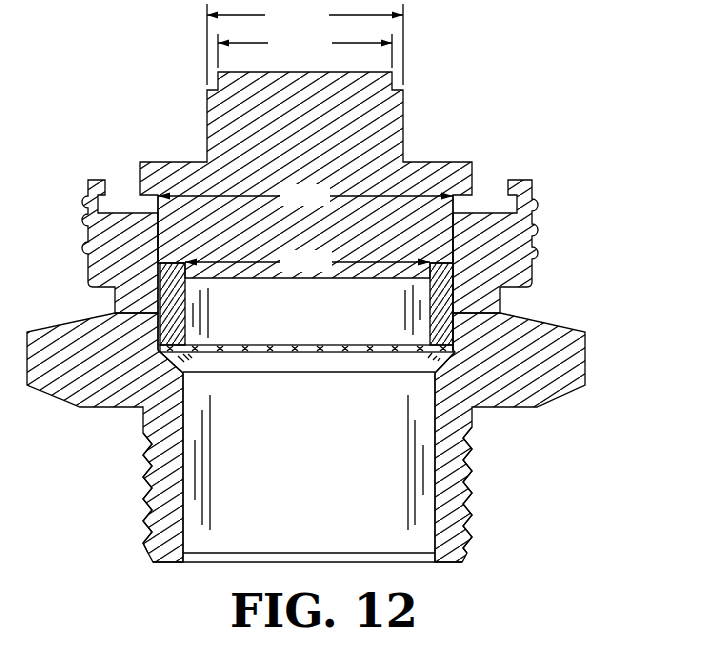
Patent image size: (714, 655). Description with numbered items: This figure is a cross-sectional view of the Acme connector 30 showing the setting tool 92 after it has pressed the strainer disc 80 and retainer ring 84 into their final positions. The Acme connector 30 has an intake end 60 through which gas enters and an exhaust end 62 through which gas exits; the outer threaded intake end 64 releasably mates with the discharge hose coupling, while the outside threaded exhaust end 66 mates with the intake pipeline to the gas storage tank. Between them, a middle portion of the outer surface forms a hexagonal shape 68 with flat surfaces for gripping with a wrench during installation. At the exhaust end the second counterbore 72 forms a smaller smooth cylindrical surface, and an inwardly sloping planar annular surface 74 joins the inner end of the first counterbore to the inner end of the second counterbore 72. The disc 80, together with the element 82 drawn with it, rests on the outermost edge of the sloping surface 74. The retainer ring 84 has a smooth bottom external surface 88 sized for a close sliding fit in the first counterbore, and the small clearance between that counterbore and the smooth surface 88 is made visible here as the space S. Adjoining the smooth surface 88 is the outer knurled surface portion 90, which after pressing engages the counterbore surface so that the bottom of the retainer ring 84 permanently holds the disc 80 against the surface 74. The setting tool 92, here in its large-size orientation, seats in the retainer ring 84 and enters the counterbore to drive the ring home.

The Acme connector 30 is at (330, 447).
The intake end 60 is at (102, 180).
The exhaust end 62 is at (455, 565).
The outer threaded intake end 64 is at (532, 237).
The outside threaded exhaust end 66 is at (472, 462).
The hexagonal shape 68 is at (585, 332).
The second counterbore 72 is at (215, 540).
The inwardly sloping planar annular surface 74 is at (372, 365).
The strainer disc 80 is at (332, 348).
The screen element 82 is at (376, 328).
The retainer ring 84 is at (160, 252).
The smooth surface 88 is at (158, 308).
The outer knurled surface portion 90 is at (455, 283).
The setting tool 92 is at (458, 162).
The space S is at (398, 337).